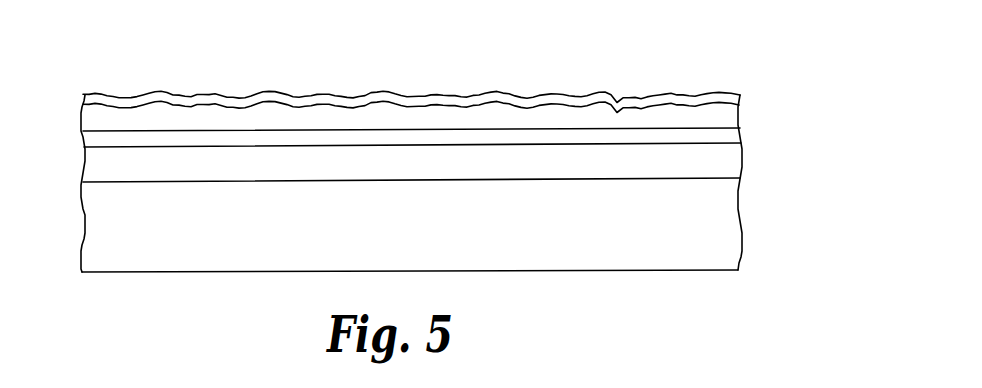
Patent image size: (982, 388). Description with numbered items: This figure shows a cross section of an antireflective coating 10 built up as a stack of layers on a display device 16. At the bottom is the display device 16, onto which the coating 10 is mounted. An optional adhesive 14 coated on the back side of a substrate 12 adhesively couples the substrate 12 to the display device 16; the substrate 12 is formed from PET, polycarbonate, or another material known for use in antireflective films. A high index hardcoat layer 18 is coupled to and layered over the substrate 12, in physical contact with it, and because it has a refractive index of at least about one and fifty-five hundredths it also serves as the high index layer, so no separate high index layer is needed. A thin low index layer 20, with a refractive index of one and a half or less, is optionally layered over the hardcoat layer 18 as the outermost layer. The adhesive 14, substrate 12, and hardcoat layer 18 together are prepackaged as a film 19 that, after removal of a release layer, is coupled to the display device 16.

The coating 10 is at (677, 48).
The substrate 12 is at (90, 163).
The adhesive 14 is at (97, 183).
The display device 16 is at (97, 246).
The high index hardcoat layer 18 is at (323, 137).
The film 19 is at (748, 127).
The low index layer 20 is at (203, 122).